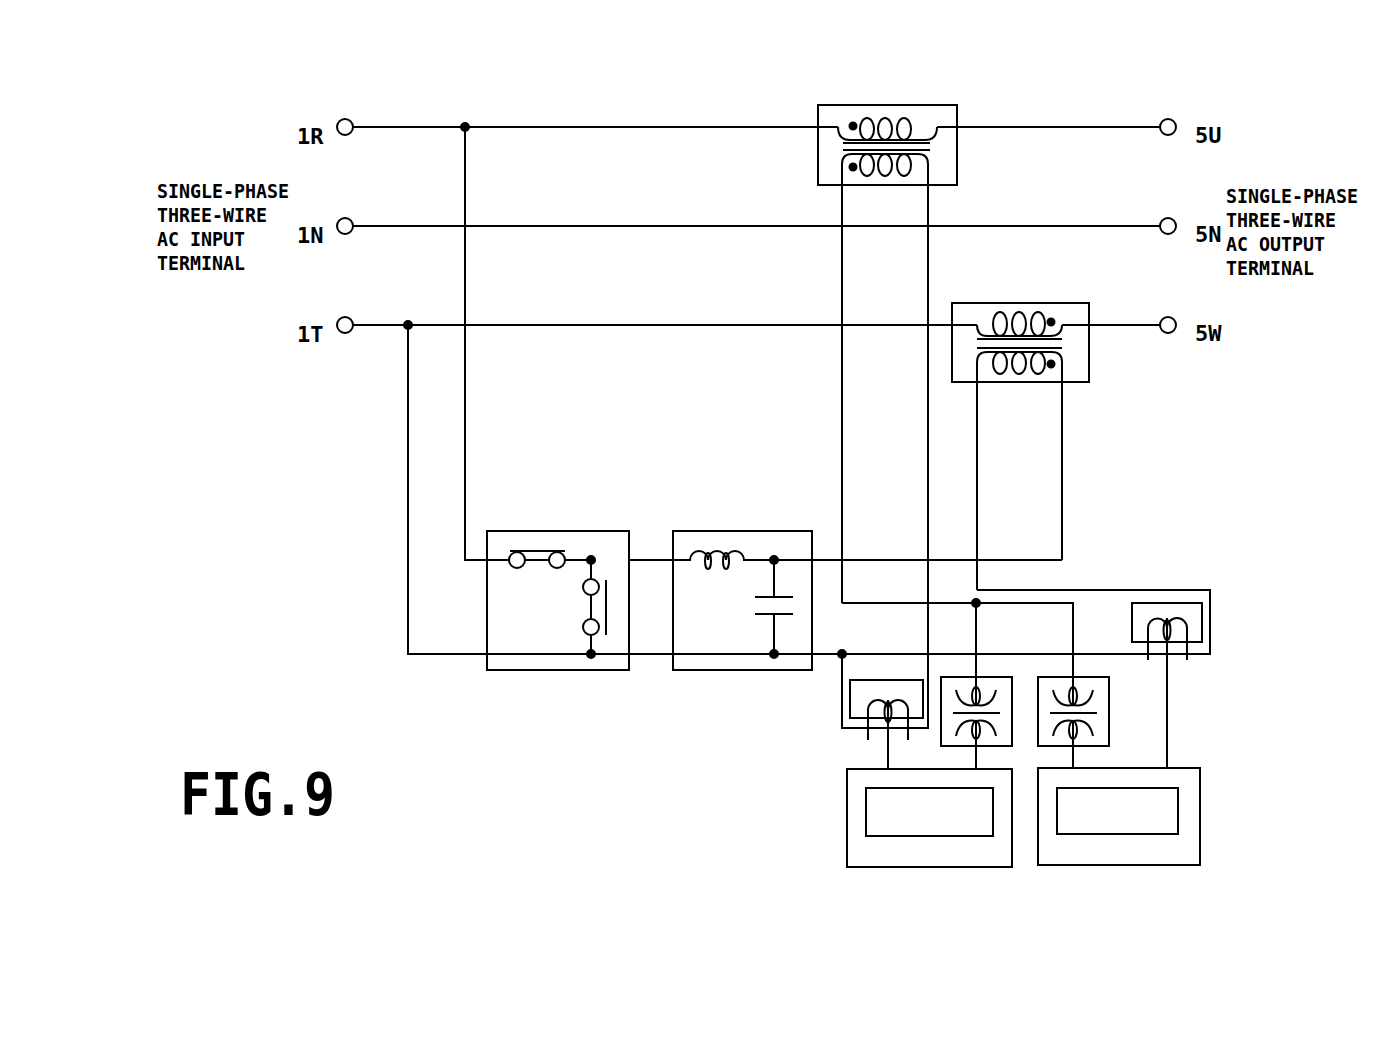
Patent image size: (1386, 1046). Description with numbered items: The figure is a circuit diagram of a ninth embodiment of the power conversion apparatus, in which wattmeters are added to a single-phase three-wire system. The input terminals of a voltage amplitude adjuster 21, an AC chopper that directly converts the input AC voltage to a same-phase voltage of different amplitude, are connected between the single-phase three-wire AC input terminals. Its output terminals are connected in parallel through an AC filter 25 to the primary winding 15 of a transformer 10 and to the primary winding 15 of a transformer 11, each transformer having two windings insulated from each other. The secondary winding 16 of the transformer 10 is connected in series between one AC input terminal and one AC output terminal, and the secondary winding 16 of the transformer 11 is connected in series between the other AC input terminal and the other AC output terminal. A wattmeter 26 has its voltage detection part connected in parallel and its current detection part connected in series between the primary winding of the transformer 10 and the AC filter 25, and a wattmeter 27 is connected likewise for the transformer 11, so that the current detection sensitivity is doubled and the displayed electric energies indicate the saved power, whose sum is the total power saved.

The transformer 10 is at (957, 108).
The transformer 11 is at (1076, 383).
The primary winding 15 is at (945, 158).
The secondary winding 16 is at (880, 112).
The voltage amplitude adjuster 21 is at (538, 672).
The AC filter 25 is at (740, 672).
The wattmeter 26 is at (893, 867).
The wattmeter 27 is at (1165, 866).